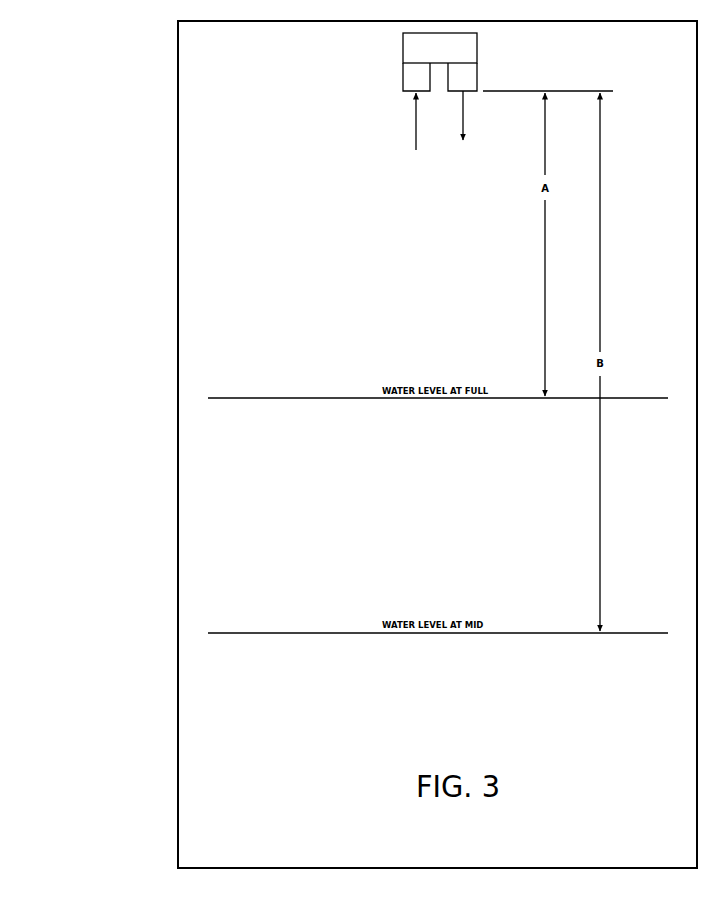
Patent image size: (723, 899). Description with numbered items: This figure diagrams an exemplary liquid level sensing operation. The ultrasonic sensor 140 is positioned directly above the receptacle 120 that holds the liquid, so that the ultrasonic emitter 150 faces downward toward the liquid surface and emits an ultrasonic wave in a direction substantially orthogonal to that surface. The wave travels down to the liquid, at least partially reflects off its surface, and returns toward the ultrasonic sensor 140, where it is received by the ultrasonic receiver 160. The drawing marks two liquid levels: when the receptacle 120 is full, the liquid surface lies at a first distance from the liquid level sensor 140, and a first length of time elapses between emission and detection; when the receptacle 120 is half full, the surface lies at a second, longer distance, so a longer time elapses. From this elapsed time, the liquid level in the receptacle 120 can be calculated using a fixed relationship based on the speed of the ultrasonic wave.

The receptacle 120 is at (173, 517).
The ultrasonic sensor 140 is at (367, 47).
The ultrasonic emitter 150 is at (485, 80).
The ultrasonic receiver 160 is at (391, 80).